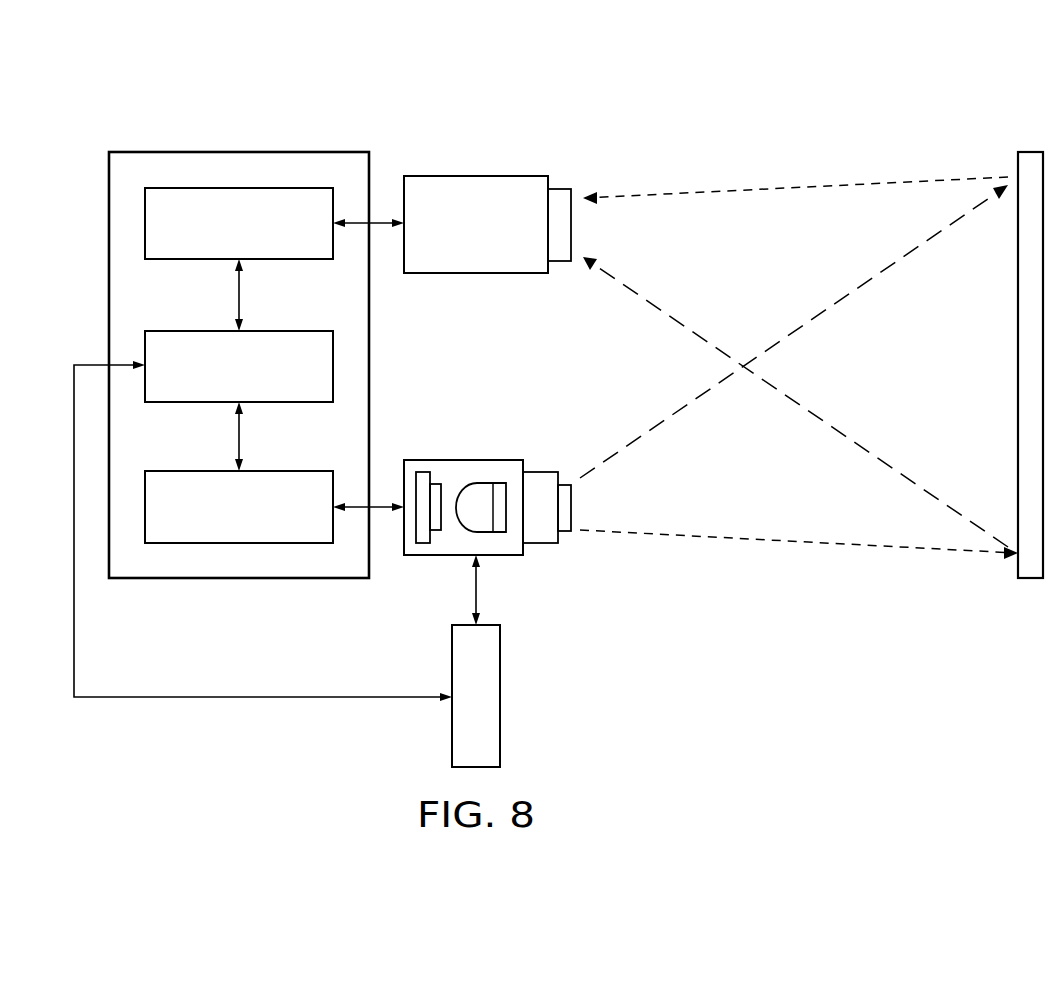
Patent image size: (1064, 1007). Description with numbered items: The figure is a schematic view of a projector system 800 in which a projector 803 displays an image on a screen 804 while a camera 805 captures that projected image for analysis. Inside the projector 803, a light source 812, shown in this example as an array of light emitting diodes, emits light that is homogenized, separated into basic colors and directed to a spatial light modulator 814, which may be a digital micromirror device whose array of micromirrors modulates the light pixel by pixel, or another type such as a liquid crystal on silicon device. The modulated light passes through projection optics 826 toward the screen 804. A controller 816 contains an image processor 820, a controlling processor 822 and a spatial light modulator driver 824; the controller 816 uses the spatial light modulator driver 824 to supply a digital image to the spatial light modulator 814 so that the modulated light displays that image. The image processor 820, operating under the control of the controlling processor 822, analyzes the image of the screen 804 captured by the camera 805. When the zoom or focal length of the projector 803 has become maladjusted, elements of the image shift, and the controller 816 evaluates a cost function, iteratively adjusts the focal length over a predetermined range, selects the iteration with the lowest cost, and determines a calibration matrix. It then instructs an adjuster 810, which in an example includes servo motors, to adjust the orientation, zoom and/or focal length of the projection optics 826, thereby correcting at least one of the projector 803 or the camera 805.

The projector system 800 is at (722, 72).
The projector 803 is at (432, 448).
The screen 804 is at (1030, 150).
The camera 805 is at (473, 186).
The adjuster 810 is at (460, 733).
The light source 812 is at (463, 487).
The spatial light modulator 814 is at (443, 524).
The controller 816 is at (202, 140).
The image processor 820 is at (205, 262).
The controlling processor 822 is at (273, 328).
The spatial light modulator (SLM) driver 824 is at (205, 470).
The projection optics 826 is at (543, 533).